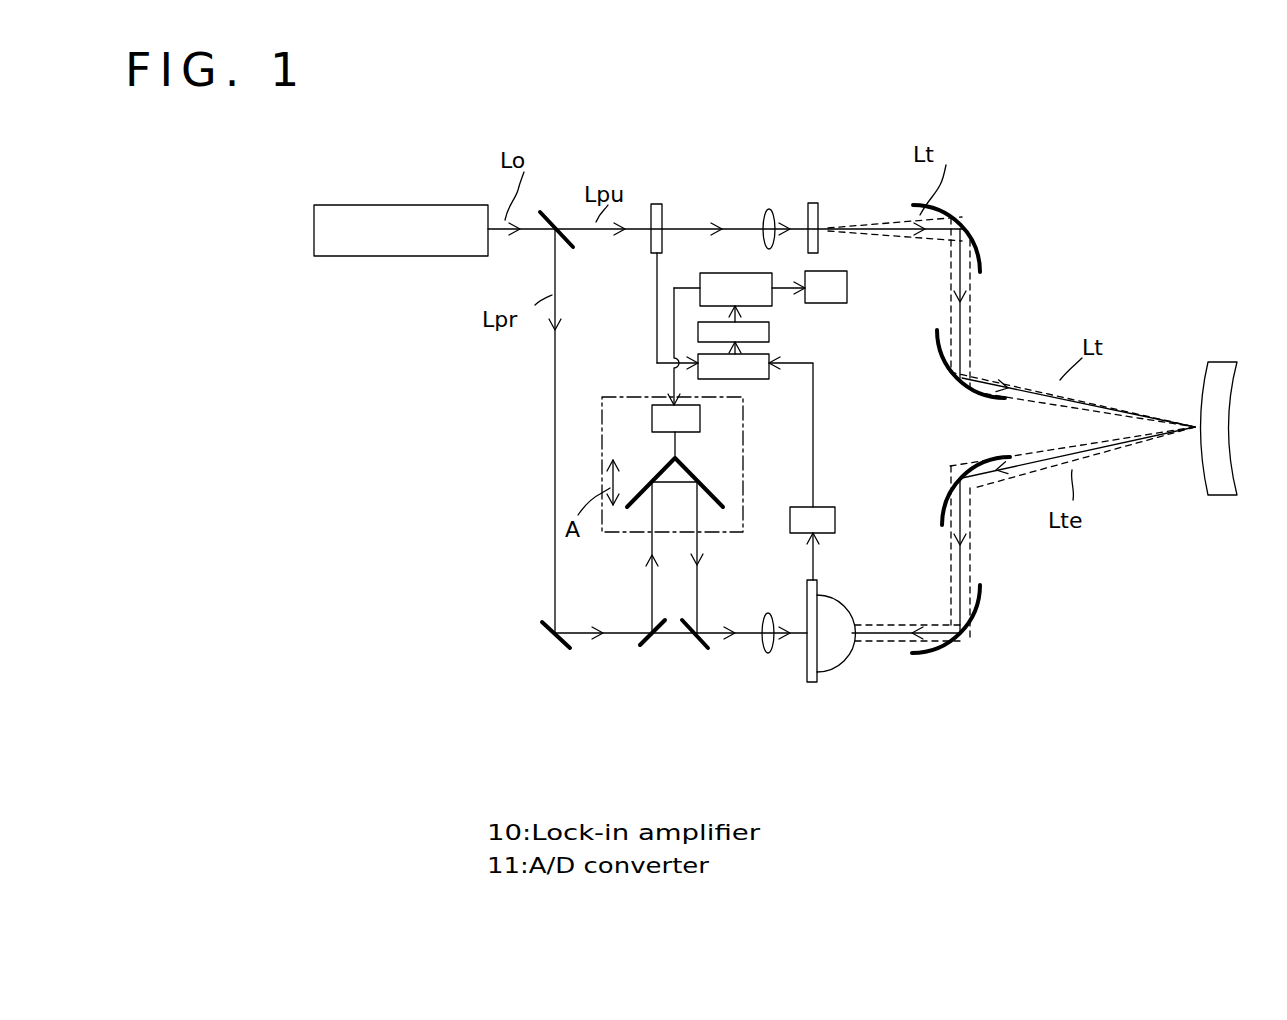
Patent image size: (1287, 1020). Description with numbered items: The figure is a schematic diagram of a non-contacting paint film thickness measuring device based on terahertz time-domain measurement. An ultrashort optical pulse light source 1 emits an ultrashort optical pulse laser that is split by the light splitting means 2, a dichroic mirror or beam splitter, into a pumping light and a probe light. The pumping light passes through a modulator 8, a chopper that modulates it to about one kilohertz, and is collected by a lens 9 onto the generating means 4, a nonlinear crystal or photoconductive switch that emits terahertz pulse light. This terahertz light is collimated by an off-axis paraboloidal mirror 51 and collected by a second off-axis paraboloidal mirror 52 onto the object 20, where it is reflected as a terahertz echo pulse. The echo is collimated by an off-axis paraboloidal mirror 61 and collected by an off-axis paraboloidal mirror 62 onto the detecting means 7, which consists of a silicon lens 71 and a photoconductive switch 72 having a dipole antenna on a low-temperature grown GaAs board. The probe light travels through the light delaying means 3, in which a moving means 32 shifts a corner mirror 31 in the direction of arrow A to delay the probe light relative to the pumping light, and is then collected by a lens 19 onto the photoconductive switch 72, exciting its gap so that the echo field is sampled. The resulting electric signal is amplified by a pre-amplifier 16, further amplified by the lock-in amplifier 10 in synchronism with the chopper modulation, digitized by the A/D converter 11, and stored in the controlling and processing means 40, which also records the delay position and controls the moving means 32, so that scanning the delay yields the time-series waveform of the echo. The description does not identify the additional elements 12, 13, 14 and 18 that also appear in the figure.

The ultrashort optical pulse light source 1 is at (420, 205).
The light splitting means 2 is at (548, 215).
The light delaying means 3 is at (600, 452).
The generating means 4 is at (815, 205).
The detecting means 7 is at (813, 661).
The modulator 8 is at (662, 212).
The lens 9 is at (770, 208).
The lock-in amplifier 10 is at (769, 354).
The A/D converter 11 is at (769, 327).
The mirror 12 is at (553, 640).
The mirror 13 is at (650, 640).
The mirror 14 is at (695, 640).
The pre-amplifier 16 is at (832, 533).
The display unit 18 is at (835, 271).
The lens 19 is at (770, 612).
The object 20 is at (1225, 362).
The corner mirror 31 is at (690, 470).
The moving means 32 is at (700, 418).
The controlling and processing means 40 is at (735, 273).
The off-axis paraboloidal mirror 51 is at (972, 235).
The off-axis paraboloidal mirror 52 is at (940, 340).
The off-axis paraboloidal mirror 61 is at (945, 497).
The off-axis paraboloidal mirror 62 is at (962, 635).
The silicon lens 71 is at (845, 660).
The photoconductive switch 72 is at (805, 645).